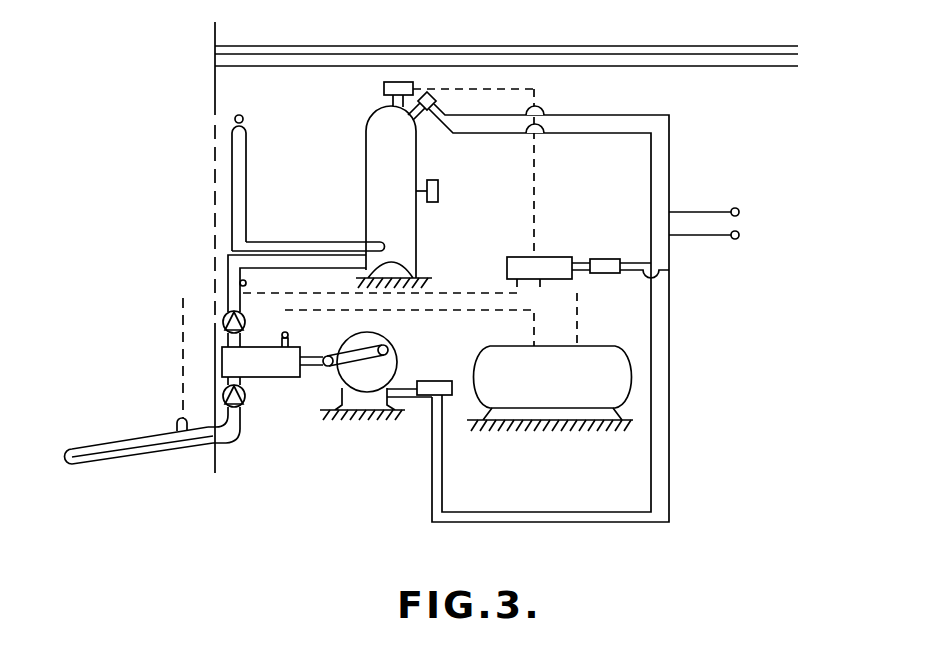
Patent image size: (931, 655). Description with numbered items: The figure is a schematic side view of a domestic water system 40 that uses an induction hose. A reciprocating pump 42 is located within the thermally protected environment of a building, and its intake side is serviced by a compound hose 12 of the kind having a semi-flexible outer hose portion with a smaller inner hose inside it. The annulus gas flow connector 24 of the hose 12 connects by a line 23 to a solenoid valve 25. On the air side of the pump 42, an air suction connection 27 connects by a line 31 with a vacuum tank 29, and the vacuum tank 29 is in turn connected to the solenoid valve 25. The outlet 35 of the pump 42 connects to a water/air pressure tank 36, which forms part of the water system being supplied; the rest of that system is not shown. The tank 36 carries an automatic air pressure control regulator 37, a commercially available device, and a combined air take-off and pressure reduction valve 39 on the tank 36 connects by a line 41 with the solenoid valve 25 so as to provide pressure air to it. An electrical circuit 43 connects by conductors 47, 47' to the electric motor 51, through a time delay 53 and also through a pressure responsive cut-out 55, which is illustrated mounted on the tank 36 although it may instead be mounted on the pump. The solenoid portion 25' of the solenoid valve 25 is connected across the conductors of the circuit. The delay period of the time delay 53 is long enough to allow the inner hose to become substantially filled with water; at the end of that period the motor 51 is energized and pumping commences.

The compound hose 12 is at (90, 446).
The line 23 is at (181, 322).
The annulus gas flow connector 24 is at (177, 424).
The solenoid valve 25 is at (542, 232).
The solenoid portion 25' is at (649, 285).
The air suction connection 27 is at (284, 334).
The vacuum tank 29 is at (612, 346).
The line 31 is at (428, 310).
The outlet 35 is at (240, 282).
The water/air pressure tank 36 is at (416, 255).
The automatic air pressure control regulator 37 is at (438, 190).
The combined air take-off and pressure reduction valve 39 is at (368, 93).
The system 40 is at (157, 228).
The line 41 is at (535, 137).
The reciprocating pump 42 is at (257, 388).
The electrical circuit 43 is at (698, 185).
The conductor 47 is at (735, 245).
The conductor 47' is at (734, 201).
The motor 51 is at (340, 374).
The time delay 53 is at (431, 381).
The pressure responsive cut-out 55 is at (427, 91).